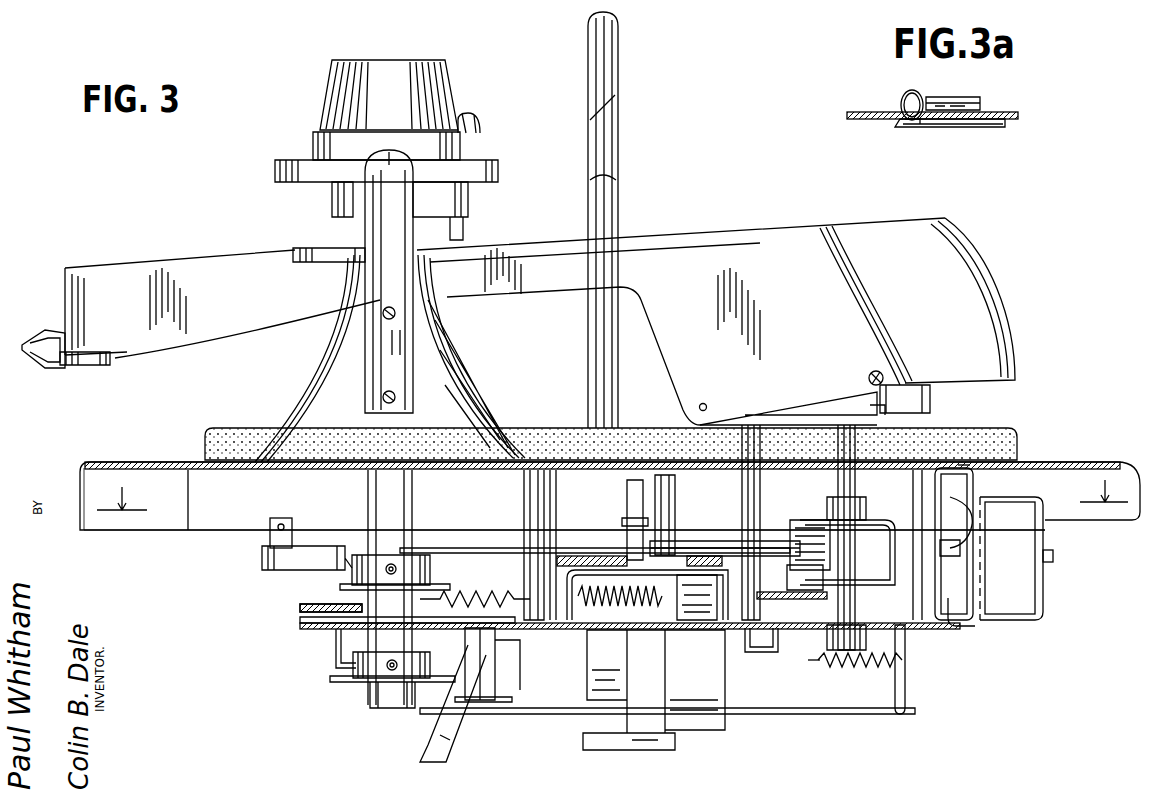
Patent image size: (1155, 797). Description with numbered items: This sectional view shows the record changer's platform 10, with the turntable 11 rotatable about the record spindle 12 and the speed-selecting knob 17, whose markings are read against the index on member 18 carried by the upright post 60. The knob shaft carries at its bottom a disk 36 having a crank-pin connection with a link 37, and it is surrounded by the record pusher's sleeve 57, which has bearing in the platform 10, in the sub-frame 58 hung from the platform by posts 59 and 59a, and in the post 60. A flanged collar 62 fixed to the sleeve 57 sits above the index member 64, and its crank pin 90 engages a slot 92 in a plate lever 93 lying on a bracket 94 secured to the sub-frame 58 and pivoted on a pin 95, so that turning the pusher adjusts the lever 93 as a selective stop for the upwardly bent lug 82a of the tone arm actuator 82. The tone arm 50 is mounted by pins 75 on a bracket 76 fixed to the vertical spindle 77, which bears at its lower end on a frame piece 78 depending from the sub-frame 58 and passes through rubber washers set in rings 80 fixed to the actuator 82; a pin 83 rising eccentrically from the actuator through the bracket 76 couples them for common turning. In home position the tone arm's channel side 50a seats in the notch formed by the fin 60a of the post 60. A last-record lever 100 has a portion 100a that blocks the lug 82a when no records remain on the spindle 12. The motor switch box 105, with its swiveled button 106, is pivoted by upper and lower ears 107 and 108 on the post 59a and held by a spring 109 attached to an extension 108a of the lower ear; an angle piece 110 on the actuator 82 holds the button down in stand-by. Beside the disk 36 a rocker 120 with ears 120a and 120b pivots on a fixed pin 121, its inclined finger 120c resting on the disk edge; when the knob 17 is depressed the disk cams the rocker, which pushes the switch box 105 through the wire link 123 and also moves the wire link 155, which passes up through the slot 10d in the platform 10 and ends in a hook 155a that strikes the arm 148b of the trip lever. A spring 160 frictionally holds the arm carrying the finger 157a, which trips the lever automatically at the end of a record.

In FIG. 3, the platform 10 is at (130, 463).
In FIG. 3A, the platform 10 is at (857, 118).
In FIG. 3A, the slot 10d is at (936, 120).
In FIG. 3, the turntable 11 is at (237, 427).
In FIG. 3, the record spindle 12 is at (618, 205).
In FIG. 3, the knob 17 is at (421, 62).
In FIG. 3, the index member 18 is at (403, 154).
In FIG. 3, the disk 36 is at (347, 677).
In FIG. 3, the link 37 is at (373, 693).
In FIG. 3, the tone arm 50 is at (715, 247).
In FIG. 3, the cartridge stylus 50a is at (113, 357).
In FIG. 3, the sleeve 57 is at (383, 640).
In FIG. 3, the sub-frame 58 is at (337, 632).
In FIG. 3, the post 59 is at (522, 500).
In FIG. 3, the post 59a is at (920, 507).
In FIG. 3, the upright post 60 is at (460, 400).
In FIG. 3, the fin 60a is at (413, 340).
In FIG. 3, the flanged collar 62 is at (352, 568).
In FIG. 3, the index member 64 is at (337, 622).
In FIG. 3, the pins 75 is at (882, 378).
In FIG. 3, the bracket 76 is at (860, 412).
In FIG. 3, the vertical spindle 77 is at (856, 443).
In FIG. 3, the frame piece 78 is at (855, 657).
In FIG. 3, the rings 80 is at (838, 500).
In FIG. 3, the tone arm actuator 82 is at (887, 585).
In FIG. 3, the lug 82a is at (790, 577).
In FIG. 3, the pin 83 is at (760, 443).
In FIG. 3, the crank pin 90 is at (272, 540).
In FIG. 3, the slot 92 is at (305, 607).
In FIG. 3, the plate lever 93 is at (557, 567).
In FIG. 3, the bracket 94 is at (585, 570).
In FIG. 3, the pin 95 is at (660, 530).
In FIG. 3, the last-record lever 100 is at (722, 690).
In FIG. 3, the right hand portion 100a is at (707, 543).
In FIG. 3, the switch box 105 is at (1018, 592).
In FIG. 3, the switch button 106 is at (960, 547).
In FIG. 3, the upper ear 107 is at (960, 463).
In FIG. 3, the lower ear 108 is at (957, 620).
In FIG. 3, the extension 108a is at (905, 683).
In FIG. 3, the spring 109 is at (835, 665).
In FIG. 3, the angle piece 110 is at (953, 497).
In FIG. 3, the rocker 120 is at (455, 658).
In FIG. 3, the ear 120a is at (512, 602).
In FIG. 3, the ear 120b is at (512, 700).
In FIG. 3, the finger 120c is at (437, 720).
In FIG. 3, the fixed vertical pin 121 is at (497, 680).
In FIG. 3, the wire link 123 is at (790, 708).
In FIG. 3A, the arm 148b is at (960, 97).
In FIG. 3, the wire link 155 is at (592, 632).
In FIG. 3A, the wire link 155 is at (993, 127).
In FIG. 3A, the hook 155a is at (903, 97).
In FIG. 3, the finger 157a is at (623, 485).
In FIG. 3, the spring 160 is at (810, 550).